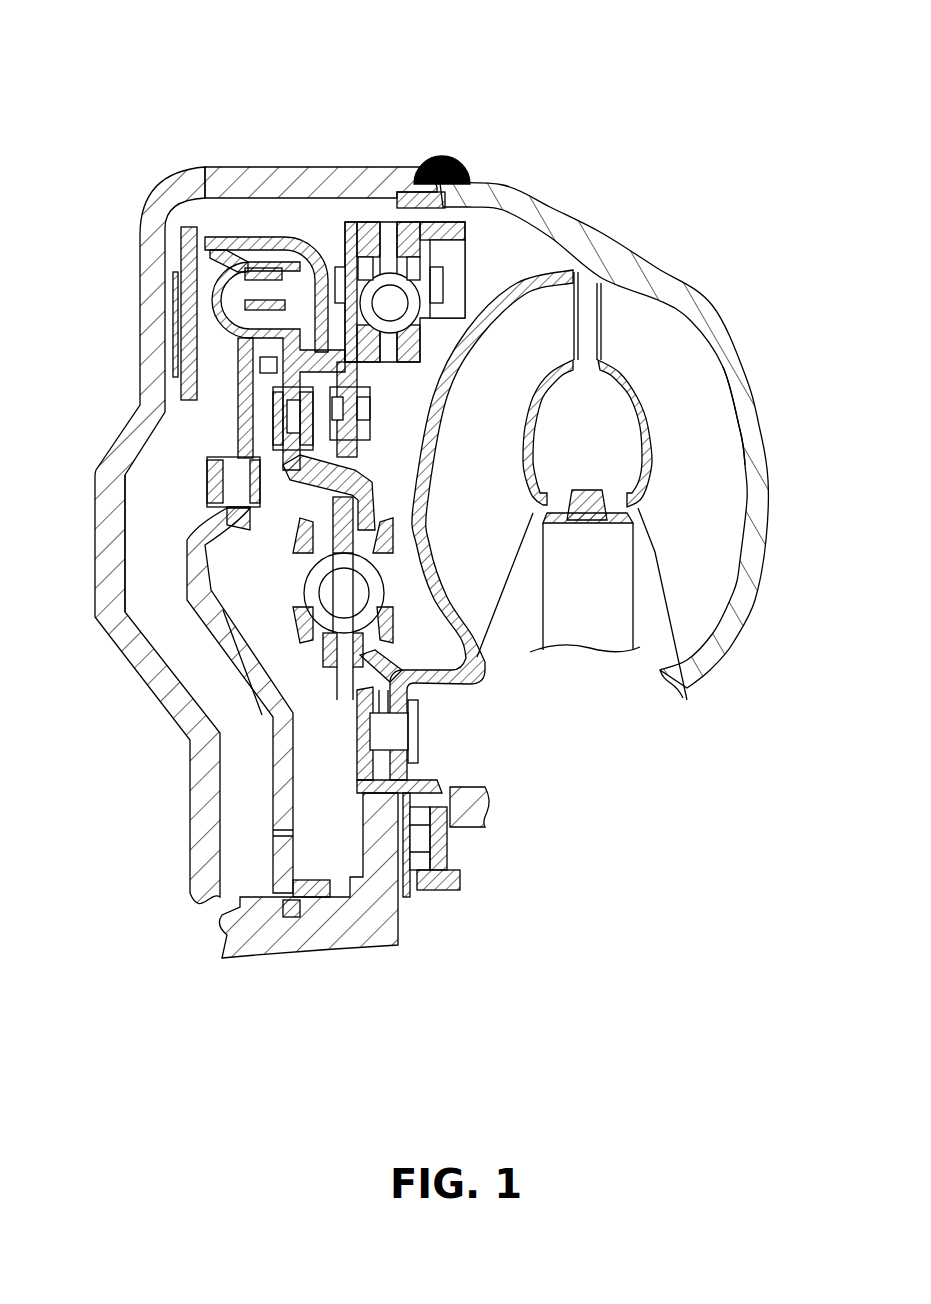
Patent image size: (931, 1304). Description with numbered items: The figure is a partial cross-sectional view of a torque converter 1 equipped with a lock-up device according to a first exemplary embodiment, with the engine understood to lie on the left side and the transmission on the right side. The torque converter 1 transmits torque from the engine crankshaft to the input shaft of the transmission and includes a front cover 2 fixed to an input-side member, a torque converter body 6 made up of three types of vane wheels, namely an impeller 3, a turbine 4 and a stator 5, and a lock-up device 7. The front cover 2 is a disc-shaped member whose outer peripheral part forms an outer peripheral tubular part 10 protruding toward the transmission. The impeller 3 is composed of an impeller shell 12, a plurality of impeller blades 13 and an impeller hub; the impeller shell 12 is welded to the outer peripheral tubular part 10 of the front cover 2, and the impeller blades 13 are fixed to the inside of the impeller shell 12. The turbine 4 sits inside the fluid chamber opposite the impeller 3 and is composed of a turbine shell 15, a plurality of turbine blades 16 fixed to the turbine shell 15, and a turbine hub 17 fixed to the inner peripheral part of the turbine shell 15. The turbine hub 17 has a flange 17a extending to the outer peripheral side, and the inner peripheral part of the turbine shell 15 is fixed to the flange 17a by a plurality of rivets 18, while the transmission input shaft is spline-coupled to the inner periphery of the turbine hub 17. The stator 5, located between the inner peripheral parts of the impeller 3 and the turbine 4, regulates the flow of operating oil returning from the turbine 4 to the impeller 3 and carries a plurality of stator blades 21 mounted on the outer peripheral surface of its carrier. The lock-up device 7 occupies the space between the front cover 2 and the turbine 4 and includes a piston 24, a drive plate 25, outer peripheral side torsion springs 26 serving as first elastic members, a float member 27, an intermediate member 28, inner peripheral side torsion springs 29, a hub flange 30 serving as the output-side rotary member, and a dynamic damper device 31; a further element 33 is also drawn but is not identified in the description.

The torque converter 1 is at (627, 110).
The front cover 2 is at (137, 280).
The impeller 3 is at (718, 318).
The turbine 4 is at (580, 305).
The stator 5 is at (645, 590).
The torque converter body 6 is at (632, 425).
The lock-up device 7 is at (168, 582).
The outer peripheral tubular part 10 is at (290, 185).
The impeller shell 12 is at (735, 377).
The impeller blades 13 is at (715, 472).
The turbine shell 15 is at (545, 265).
The turbine blades 16 is at (483, 607).
The turbine hub 17 is at (383, 963).
The flange 17a is at (383, 833).
The rivets 18 is at (397, 727).
The stator blades 21 is at (607, 637).
The piston 24 is at (227, 643).
The drive plate 25 is at (245, 367).
The outer peripheral side torsion springs 26 is at (245, 258).
The float member 27 is at (296, 237).
The intermediate member 28 is at (305, 501).
The inner peripheral side torsion springs 29 is at (322, 625).
The hub flange 30 is at (352, 703).
The dynamic damper device 31 is at (474, 228).
The seal plate 33 is at (175, 273).